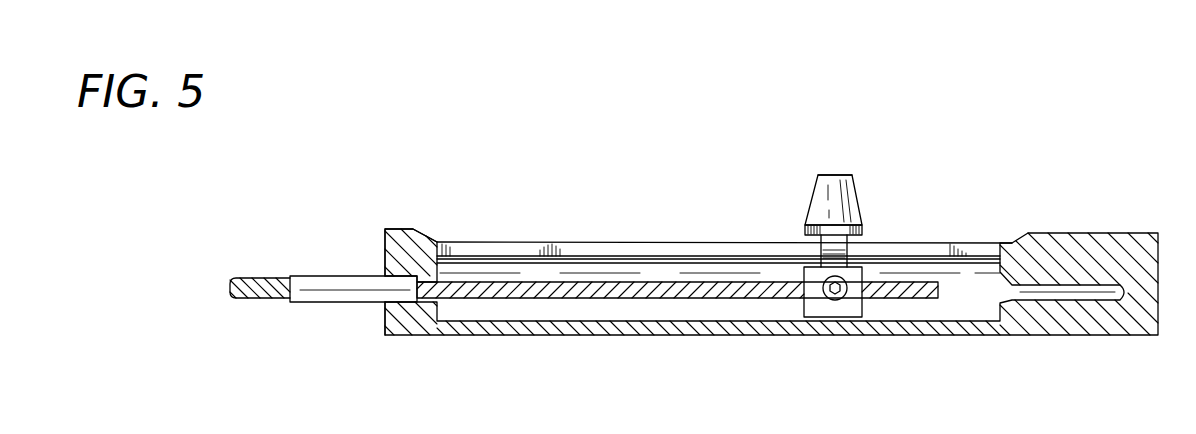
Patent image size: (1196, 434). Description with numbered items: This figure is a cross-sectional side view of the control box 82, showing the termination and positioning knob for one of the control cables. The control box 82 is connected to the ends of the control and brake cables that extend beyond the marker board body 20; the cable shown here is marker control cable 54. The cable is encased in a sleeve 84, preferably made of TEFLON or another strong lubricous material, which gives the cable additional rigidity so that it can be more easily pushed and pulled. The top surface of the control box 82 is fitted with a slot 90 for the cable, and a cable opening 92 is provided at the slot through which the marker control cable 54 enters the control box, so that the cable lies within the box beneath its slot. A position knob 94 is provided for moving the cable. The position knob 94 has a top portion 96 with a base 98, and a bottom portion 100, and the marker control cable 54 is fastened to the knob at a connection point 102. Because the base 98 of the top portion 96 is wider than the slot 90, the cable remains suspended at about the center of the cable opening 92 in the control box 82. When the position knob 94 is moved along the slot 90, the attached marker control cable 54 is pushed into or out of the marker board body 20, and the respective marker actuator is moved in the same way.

The marker board body 20 is at (203, 422).
The marker control cable 54 is at (665, 281).
The control box 82 is at (1105, 337).
The sleeve 84 is at (323, 276).
The slot 90 is at (502, 257).
The cable opening 92 is at (385, 308).
The position knob 94 is at (833, 174).
The top portion 96 is at (854, 185).
The base 98 is at (806, 226).
The bottom portion 100 is at (855, 318).
The connection point 102 is at (826, 318).